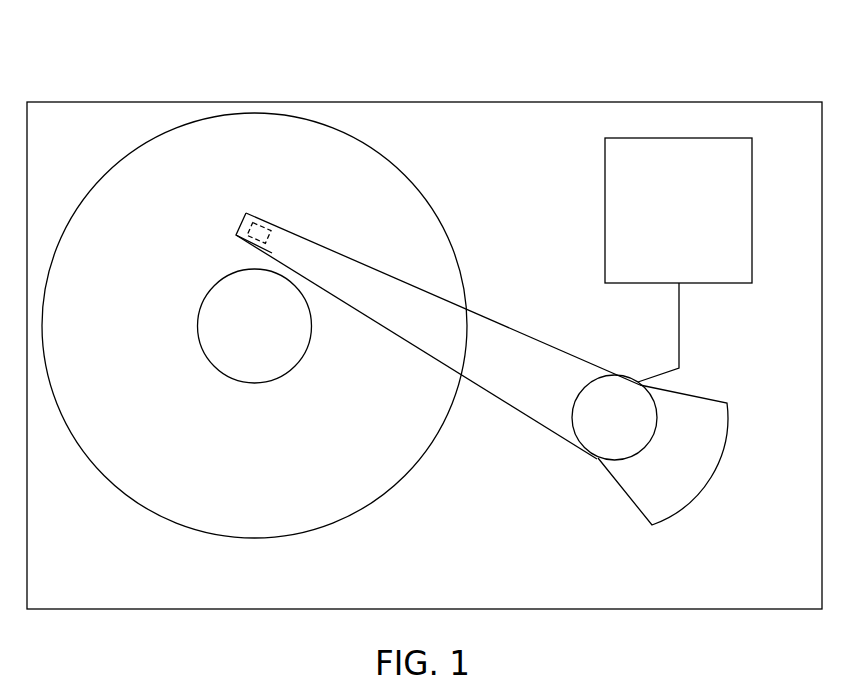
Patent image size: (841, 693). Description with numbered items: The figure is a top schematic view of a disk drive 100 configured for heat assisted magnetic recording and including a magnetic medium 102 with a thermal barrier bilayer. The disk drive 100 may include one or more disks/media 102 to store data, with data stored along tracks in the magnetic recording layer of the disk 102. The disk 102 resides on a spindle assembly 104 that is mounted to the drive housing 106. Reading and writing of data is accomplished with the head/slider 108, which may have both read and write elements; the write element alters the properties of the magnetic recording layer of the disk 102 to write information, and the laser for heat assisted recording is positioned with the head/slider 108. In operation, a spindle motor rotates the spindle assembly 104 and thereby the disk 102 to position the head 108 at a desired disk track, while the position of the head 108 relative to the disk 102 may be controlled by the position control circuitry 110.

The disk drive 100 is at (160, 70).
The magnetic medium 102 is at (383, 156).
The spindle assembly 104 is at (232, 336).
The drive housing 106 is at (537, 101).
The head/slider 108 is at (270, 230).
The position control circuitry 110 is at (652, 226).